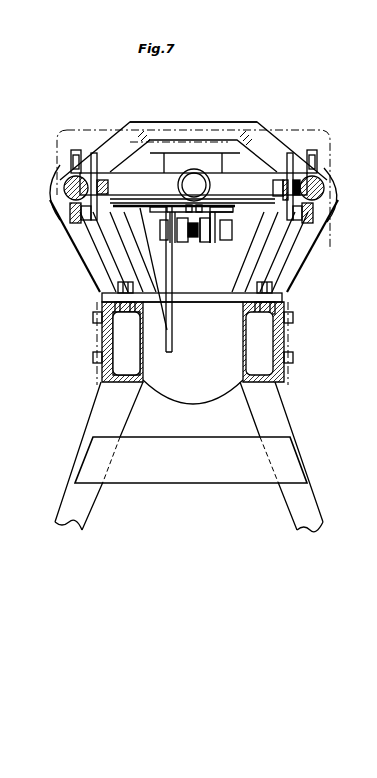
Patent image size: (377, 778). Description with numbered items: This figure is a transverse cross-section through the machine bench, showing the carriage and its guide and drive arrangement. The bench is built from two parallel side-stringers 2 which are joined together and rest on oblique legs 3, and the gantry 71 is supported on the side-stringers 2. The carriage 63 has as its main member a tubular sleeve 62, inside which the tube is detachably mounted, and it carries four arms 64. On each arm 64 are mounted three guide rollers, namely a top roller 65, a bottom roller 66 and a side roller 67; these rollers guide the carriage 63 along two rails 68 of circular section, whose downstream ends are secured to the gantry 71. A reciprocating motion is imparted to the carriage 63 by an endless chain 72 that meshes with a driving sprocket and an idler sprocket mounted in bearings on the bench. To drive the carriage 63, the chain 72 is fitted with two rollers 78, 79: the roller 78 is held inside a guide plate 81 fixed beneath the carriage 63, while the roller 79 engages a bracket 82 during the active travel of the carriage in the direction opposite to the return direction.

The side-stringers 2 is at (108, 357).
The oblique legs 3 is at (117, 412).
The tubular sleeve 62 is at (203, 176).
The carriage 63 is at (143, 187).
The arms 64 is at (258, 185).
The top roller 65 is at (74, 162).
The bottom roller 66 is at (73, 212).
The side roller 67 is at (102, 183).
The rails 68 is at (72, 186).
The gantry 71 is at (255, 123).
The endless chain 72 is at (202, 246).
The roller 78 is at (164, 240).
The roller 79 is at (223, 242).
The guide plate 81 is at (173, 268).
The bracket 82 is at (230, 226).